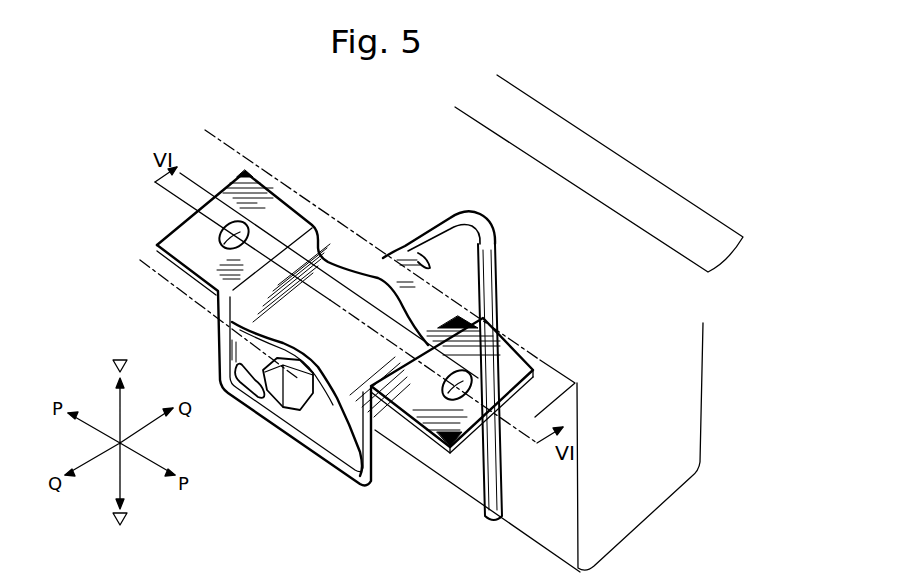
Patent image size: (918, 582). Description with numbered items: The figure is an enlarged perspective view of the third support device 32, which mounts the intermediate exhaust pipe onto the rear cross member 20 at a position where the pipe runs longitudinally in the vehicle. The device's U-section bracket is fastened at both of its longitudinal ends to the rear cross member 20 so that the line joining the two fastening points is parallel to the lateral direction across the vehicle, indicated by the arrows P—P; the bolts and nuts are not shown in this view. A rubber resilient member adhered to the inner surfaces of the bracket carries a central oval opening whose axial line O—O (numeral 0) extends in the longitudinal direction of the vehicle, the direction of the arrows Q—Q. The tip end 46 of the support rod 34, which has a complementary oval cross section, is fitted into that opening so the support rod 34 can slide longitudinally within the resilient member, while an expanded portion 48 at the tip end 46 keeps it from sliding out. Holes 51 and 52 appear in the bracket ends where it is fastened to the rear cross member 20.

The rear cross member 20 is at (620, 152).
The third support device 32 is at (390, 186).
The support rod 34 is at (498, 281).
The tip end 46 is at (377, 268).
The expanded portion 48 is at (310, 393).
The hole 51 is at (457, 403).
The hole 52 is at (226, 247).
The axial line O—O 0 is at (473, 218).